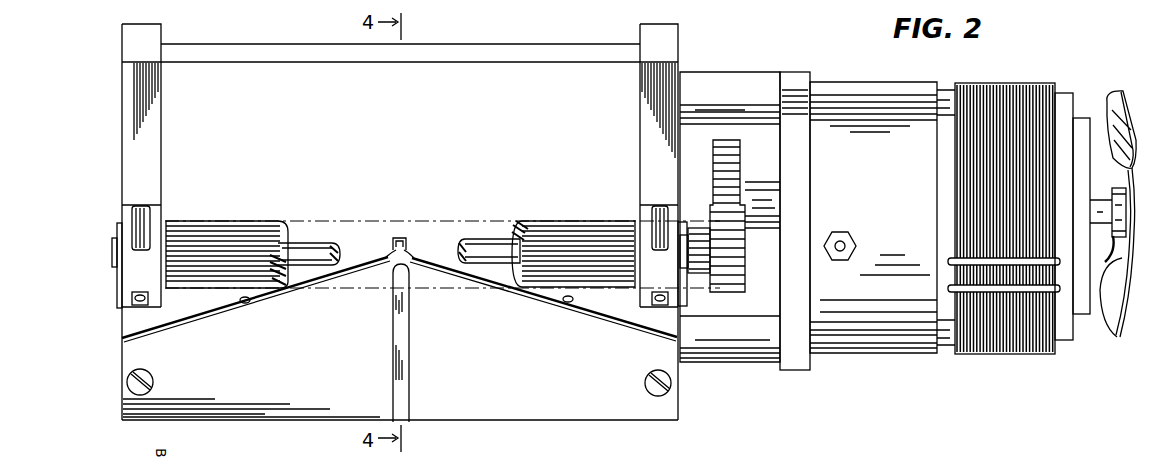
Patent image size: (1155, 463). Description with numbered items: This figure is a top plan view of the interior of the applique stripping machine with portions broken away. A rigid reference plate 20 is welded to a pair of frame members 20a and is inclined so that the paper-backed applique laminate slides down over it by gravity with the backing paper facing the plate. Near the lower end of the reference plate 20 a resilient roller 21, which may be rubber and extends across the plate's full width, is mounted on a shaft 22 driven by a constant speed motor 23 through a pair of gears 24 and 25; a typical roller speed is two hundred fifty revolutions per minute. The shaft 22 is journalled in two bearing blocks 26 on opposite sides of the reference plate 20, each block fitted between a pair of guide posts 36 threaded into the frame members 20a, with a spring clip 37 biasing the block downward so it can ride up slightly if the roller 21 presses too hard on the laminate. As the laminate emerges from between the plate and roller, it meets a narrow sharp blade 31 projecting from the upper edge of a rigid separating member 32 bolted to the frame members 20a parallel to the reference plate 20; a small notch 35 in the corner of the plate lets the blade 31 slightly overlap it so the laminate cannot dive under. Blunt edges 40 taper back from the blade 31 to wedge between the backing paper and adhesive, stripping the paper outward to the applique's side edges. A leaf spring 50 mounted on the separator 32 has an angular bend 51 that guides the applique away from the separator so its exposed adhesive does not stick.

The reference plate 20 is at (440, 66).
The frame members 20a is at (143, 34).
The roller 21 is at (558, 238).
The shaft 22 is at (482, 246).
The motor 23 is at (852, 95).
The gear 24 is at (733, 176).
The gear 25 is at (732, 250).
The bearing blocks 26 is at (150, 265).
The blade 31 is at (412, 242).
The separating member 32 is at (278, 404).
The notch 35 is at (395, 236).
The guide posts 36 is at (140, 205).
The spring clip 37 is at (117, 283).
The edges 40 is at (246, 299).
The leaf spring 50 is at (405, 367).
The angular bend 51 is at (405, 306).